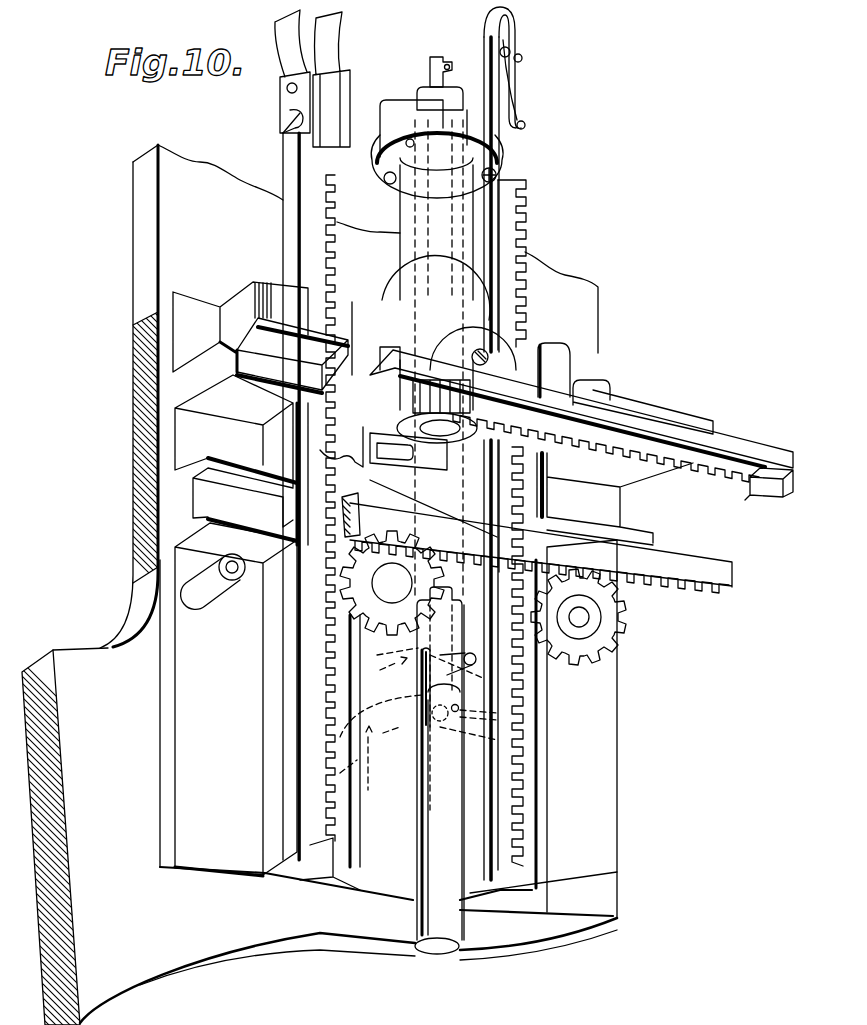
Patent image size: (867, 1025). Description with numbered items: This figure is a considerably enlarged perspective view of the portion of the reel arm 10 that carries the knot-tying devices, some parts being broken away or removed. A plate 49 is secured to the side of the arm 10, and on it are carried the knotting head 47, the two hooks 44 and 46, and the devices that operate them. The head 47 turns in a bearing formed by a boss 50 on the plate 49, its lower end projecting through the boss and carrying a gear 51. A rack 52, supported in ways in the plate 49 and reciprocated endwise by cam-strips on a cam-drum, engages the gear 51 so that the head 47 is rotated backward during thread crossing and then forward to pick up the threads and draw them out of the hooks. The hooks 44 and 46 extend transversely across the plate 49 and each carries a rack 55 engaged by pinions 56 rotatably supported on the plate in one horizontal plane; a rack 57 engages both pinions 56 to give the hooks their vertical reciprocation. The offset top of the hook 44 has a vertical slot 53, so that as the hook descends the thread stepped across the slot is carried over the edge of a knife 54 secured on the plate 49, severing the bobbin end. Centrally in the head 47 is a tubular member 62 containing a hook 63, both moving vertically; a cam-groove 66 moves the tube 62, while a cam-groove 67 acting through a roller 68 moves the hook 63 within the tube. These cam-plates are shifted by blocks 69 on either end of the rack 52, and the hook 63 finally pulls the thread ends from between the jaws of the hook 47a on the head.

The arm of the reel 10 is at (172, 240).
The hook 44 is at (283, 85).
The hook 46 is at (523, 92).
The knotting head 47 is at (478, 158).
The hook on the head 47a is at (403, 107).
The plate 49 is at (195, 320).
The boss 50 is at (478, 310).
The gear 51 is at (470, 390).
The rack 52 is at (633, 438).
The vertical slot 53 is at (330, 118).
The knife 54 is at (339, 451).
The rack 55 is at (336, 212).
The pinions 56 is at (363, 592).
The rack 57 is at (720, 573).
The tubular member 62 is at (450, 97).
The hook 63 is at (440, 60).
The cam-groove 66 is at (420, 668).
The cam-groove 67 is at (418, 753).
The roller 68 is at (435, 703).
The blocks 69 is at (771, 500).